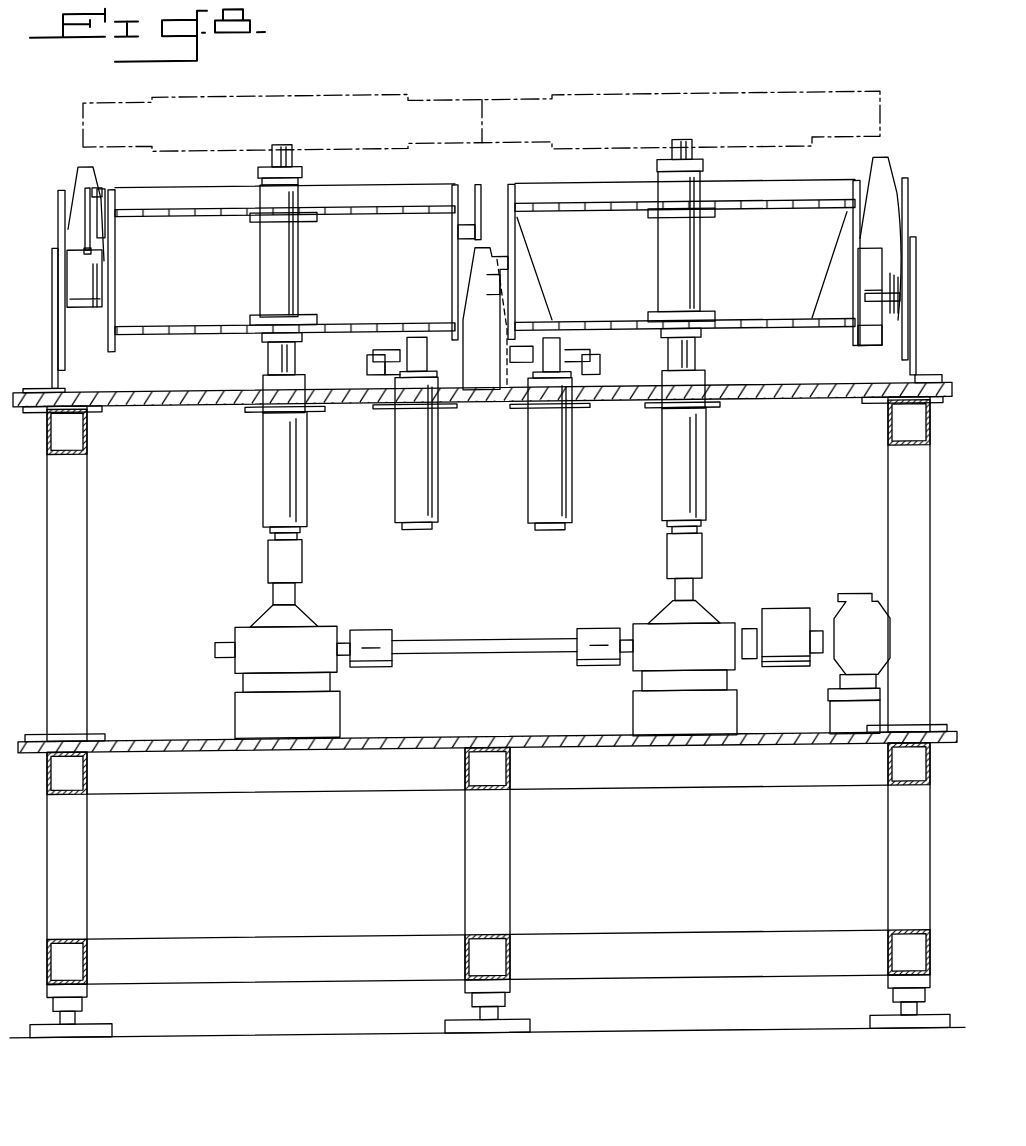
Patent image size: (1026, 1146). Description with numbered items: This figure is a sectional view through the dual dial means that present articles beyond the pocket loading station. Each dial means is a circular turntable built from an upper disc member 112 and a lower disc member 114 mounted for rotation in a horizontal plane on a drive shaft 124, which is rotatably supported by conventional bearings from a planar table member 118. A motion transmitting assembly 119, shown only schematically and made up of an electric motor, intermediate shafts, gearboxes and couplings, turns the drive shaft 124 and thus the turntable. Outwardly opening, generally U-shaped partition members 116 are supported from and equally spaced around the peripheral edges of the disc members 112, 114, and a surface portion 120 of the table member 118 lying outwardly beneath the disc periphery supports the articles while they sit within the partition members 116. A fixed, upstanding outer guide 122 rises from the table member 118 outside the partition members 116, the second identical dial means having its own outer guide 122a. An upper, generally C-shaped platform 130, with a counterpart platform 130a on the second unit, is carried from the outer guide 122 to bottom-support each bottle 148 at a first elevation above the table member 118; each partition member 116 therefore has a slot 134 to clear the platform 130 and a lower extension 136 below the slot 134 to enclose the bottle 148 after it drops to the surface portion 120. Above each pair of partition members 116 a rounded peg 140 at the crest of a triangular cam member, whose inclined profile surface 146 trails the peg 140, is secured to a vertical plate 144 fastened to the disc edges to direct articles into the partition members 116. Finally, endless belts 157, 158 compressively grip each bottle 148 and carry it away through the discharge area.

The upper disc member 112 is at (213, 218).
The lower disc member 114 is at (188, 337).
The partition member 116 is at (880, 264).
The table member 118 is at (203, 409).
The motion transmitting assembly 119 is at (460, 613).
The surface portion 120 is at (483, 400).
The outer guide 122 is at (58, 208).
The outer guide 122a is at (913, 188).
The drive shaft 124 is at (277, 365).
The platform 130 is at (85, 309).
The platform 130a is at (891, 310).
The slot 134 is at (862, 318).
The lower extension 136 is at (875, 340).
The peg 140 is at (96, 189).
The vertical plate 144 is at (113, 228).
The inclined profile surface 146 is at (85, 228).
The bottle 148 is at (88, 289).
The endless belt 157 is at (525, 360).
The endless belt 158 is at (450, 360).